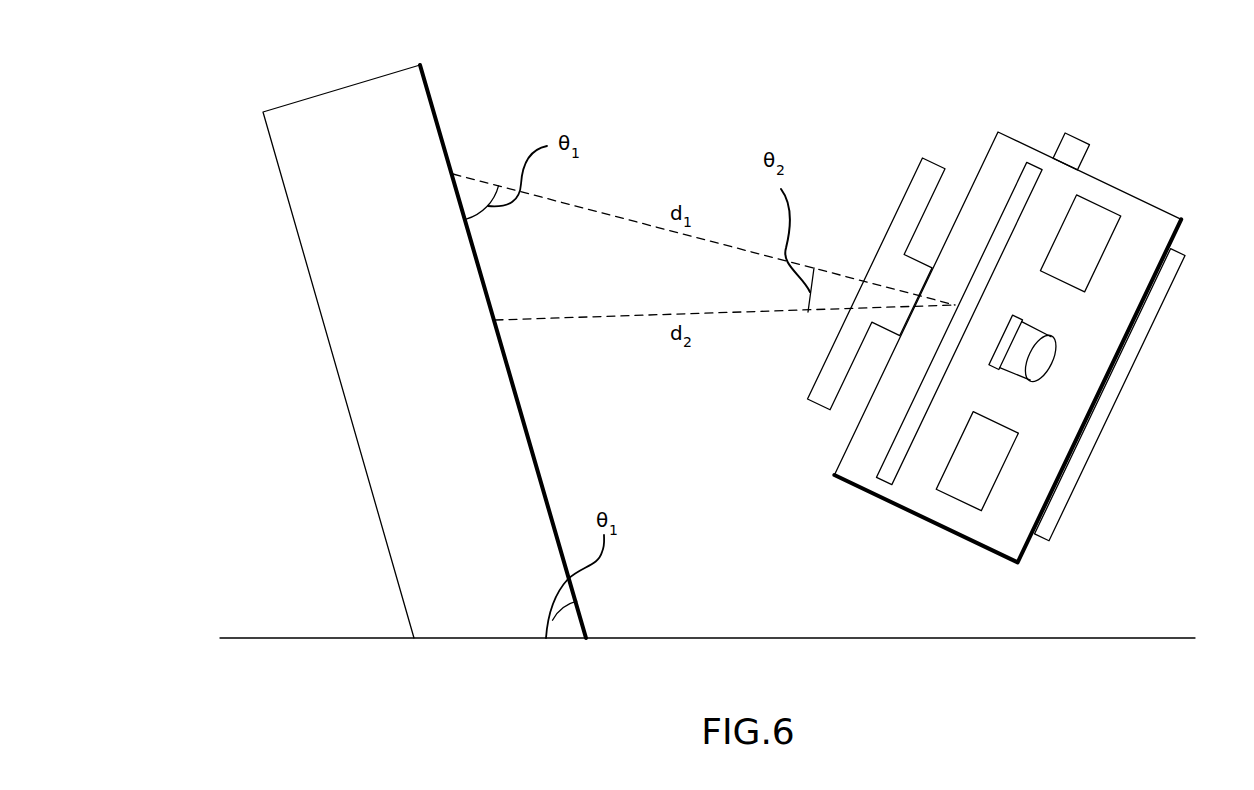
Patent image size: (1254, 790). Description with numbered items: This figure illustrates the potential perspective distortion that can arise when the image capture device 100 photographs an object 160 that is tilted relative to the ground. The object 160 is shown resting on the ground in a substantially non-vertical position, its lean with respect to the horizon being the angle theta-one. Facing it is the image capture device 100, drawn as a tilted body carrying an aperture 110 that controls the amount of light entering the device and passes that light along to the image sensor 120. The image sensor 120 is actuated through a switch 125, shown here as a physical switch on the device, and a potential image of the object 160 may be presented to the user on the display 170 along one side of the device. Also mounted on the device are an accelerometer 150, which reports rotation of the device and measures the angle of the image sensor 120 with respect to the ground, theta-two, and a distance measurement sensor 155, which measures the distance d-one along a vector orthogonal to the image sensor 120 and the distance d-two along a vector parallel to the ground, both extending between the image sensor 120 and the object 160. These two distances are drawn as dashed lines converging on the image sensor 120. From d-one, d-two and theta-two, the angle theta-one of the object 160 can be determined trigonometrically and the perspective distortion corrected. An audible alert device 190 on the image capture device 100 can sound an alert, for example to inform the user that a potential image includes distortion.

The image capture device 100 is at (952, 84).
The aperture 110 is at (809, 402).
The image sensor 120 is at (1015, 228).
The switch 125 is at (1078, 137).
The accelerometer 150 is at (961, 473).
The distance measurement sensor 155 is at (1066, 244).
The object 160 is at (408, 424).
The display 170 is at (1177, 258).
The audible alert device 190 is at (1004, 367).